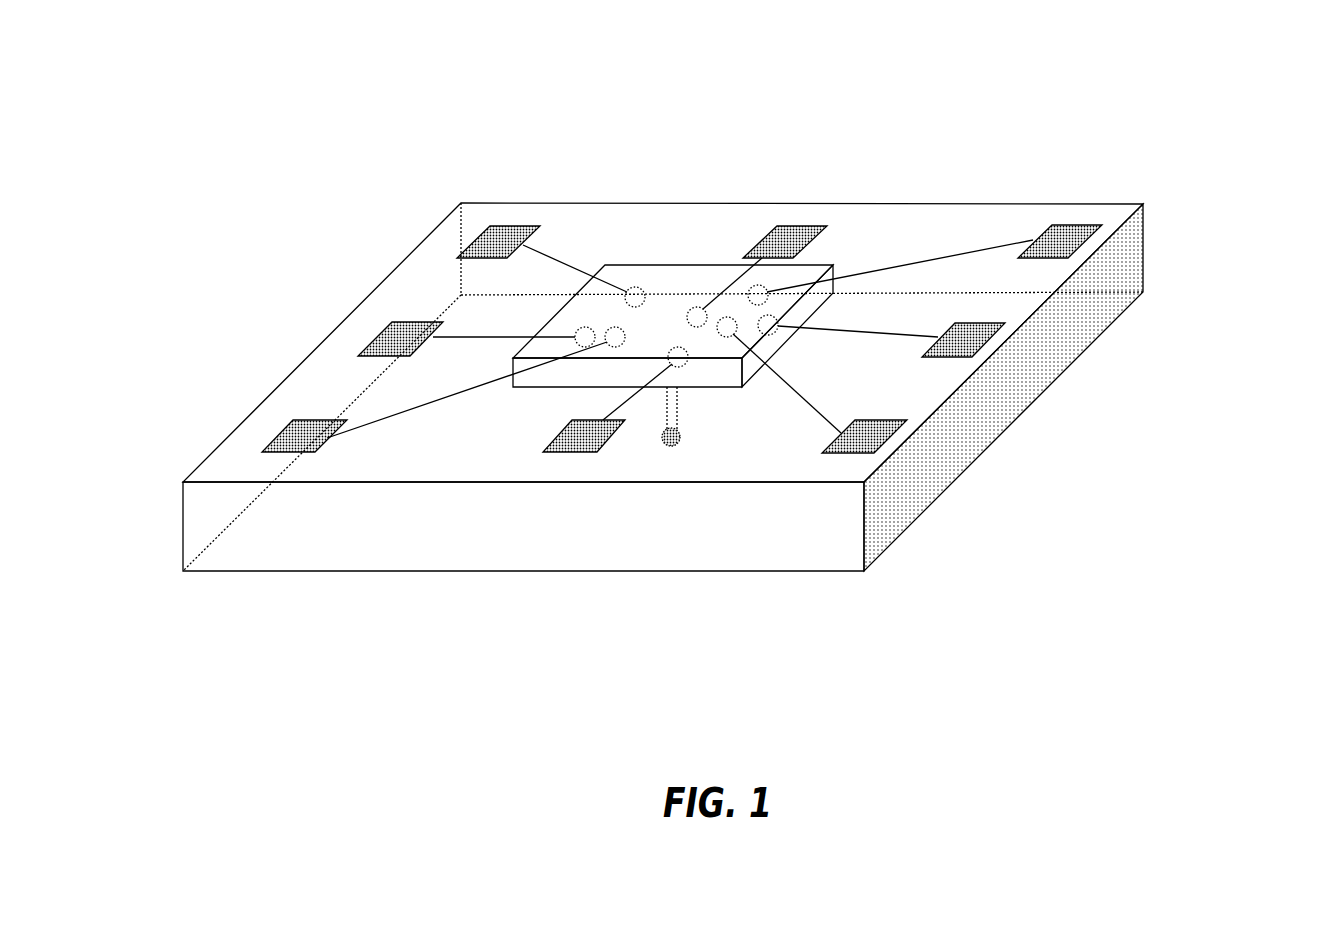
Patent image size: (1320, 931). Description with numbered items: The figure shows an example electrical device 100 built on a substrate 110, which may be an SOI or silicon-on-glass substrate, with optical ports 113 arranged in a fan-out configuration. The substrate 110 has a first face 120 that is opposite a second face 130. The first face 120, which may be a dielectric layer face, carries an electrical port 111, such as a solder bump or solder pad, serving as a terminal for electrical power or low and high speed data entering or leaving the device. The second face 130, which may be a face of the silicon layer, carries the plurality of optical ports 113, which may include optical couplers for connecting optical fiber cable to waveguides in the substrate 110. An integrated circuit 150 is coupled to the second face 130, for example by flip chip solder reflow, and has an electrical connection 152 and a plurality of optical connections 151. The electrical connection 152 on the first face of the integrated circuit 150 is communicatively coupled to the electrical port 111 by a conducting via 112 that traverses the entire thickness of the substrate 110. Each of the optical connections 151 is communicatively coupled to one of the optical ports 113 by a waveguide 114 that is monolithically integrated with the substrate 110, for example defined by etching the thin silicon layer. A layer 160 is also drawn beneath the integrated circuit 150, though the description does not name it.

The electrical device 100 is at (326, 76).
The substrate 110 is at (1143, 253).
The electrical port 111 is at (682, 435).
The conducting via 112 is at (677, 413).
The optical ports 113 is at (510, 237).
The waveguide 114 is at (568, 265).
The first face 120 is at (545, 535).
The second face 130 is at (703, 227).
The integrated circuit 150 is at (713, 344).
The optical connections 151 is at (635, 287).
The electrical connection 152 is at (647, 387).
The die attach layer 160 is at (567, 367).